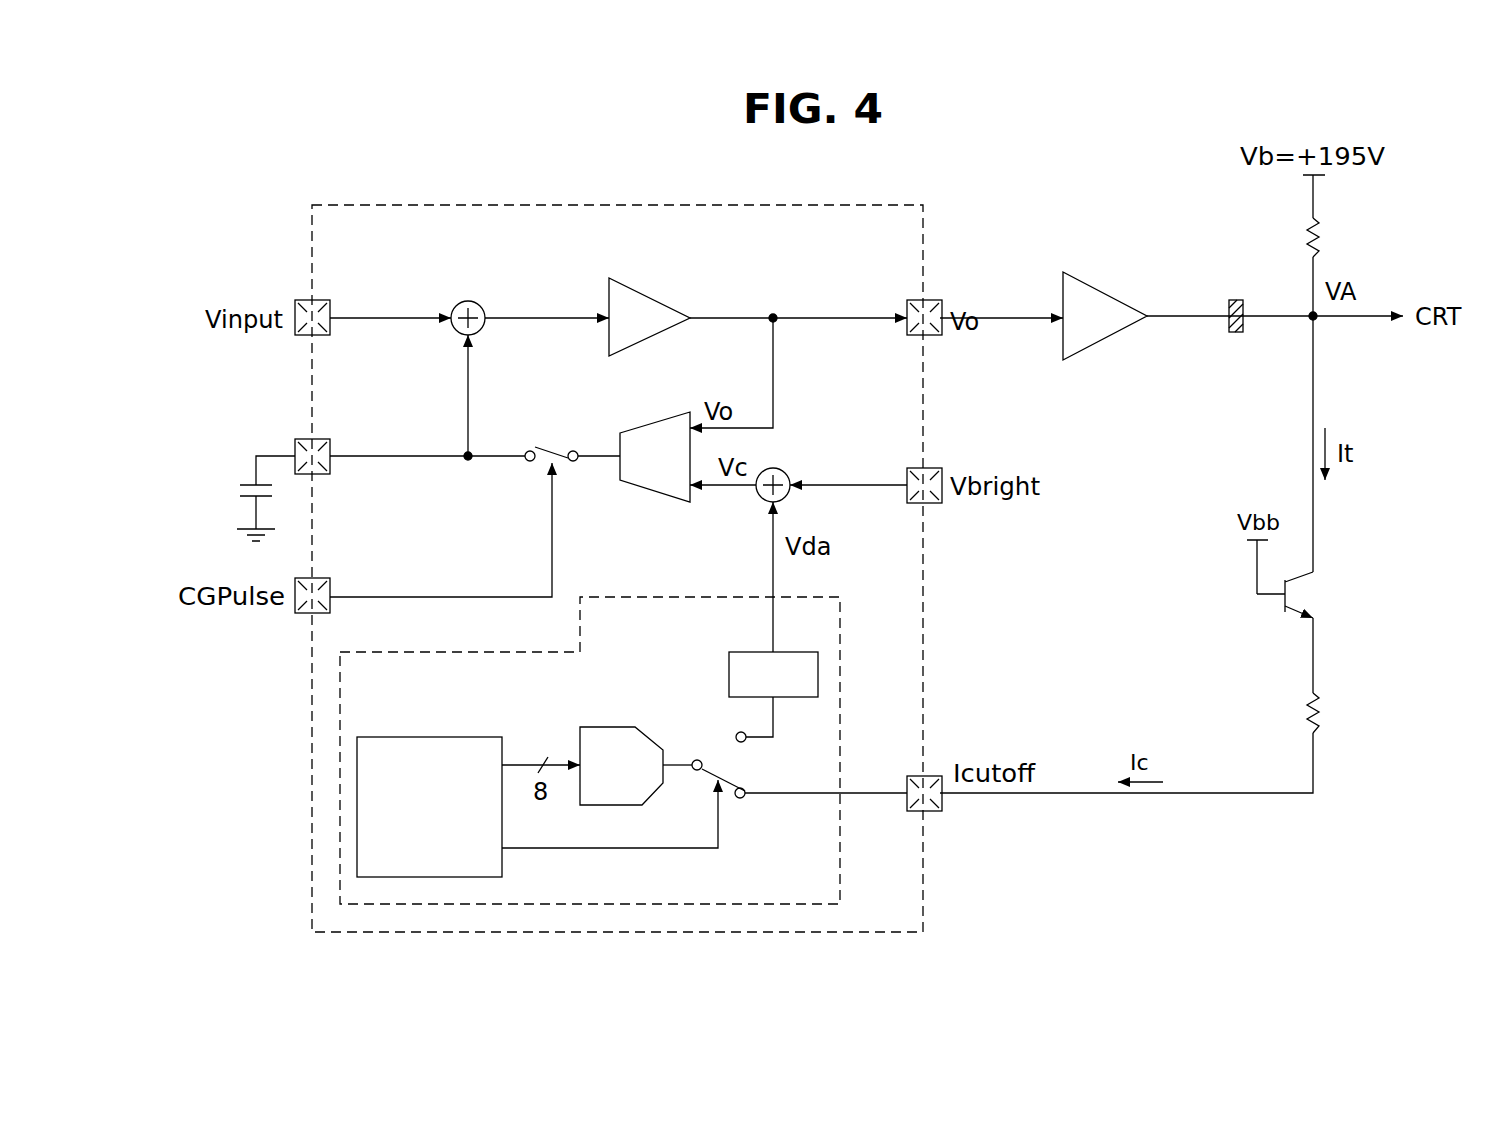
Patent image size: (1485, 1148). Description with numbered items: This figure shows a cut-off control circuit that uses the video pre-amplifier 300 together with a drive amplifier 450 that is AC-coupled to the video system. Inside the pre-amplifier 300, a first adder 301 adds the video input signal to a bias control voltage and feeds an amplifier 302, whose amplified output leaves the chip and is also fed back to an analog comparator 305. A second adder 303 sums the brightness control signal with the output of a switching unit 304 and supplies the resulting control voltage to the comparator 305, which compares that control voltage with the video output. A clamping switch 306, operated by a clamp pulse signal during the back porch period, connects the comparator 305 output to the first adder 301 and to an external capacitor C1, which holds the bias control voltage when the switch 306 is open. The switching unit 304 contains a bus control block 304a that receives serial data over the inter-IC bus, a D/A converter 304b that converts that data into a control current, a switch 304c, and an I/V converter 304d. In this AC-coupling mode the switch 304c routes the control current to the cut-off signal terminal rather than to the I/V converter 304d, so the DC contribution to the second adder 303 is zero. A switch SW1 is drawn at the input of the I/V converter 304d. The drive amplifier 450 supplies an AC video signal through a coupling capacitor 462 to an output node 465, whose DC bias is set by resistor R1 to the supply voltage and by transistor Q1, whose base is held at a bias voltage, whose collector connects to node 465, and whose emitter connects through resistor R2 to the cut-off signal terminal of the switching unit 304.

The video pre-amplifier 300 is at (923, 222).
The first adder 301 is at (487, 302).
The amplifier 302 is at (642, 290).
The second adder 303 is at (766, 501).
The switching unit 304 is at (662, 596).
The bus control block 304a is at (436, 736).
The digital-to-analog (D/A) converter 304b is at (617, 725).
The switch 304c is at (696, 772).
The I/V converter 304d is at (752, 650).
The analog comparator 305 is at (655, 420).
The clamping switch 306 is at (537, 443).
The drive amplifier 450 is at (1123, 330).
The capacitor 462 is at (1235, 343).
The output node 465 is at (1323, 320).
The resistor R1 is at (1336, 237).
The resistor R2 is at (1332, 713).
The transistor Q1 is at (1303, 595).
The capacitor C1 is at (247, 498).
The switch SW1 is at (727, 724).